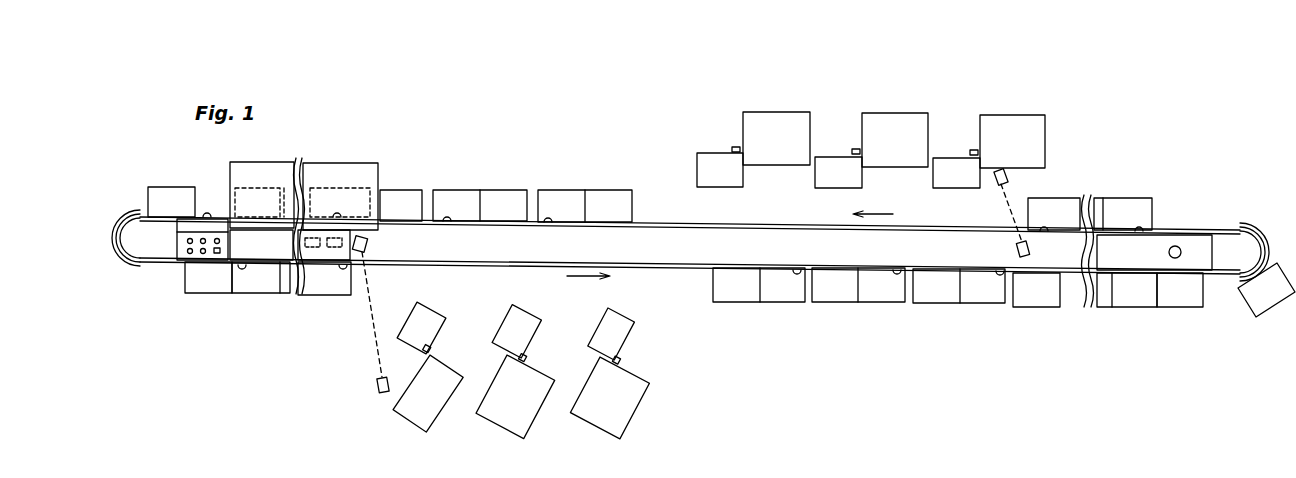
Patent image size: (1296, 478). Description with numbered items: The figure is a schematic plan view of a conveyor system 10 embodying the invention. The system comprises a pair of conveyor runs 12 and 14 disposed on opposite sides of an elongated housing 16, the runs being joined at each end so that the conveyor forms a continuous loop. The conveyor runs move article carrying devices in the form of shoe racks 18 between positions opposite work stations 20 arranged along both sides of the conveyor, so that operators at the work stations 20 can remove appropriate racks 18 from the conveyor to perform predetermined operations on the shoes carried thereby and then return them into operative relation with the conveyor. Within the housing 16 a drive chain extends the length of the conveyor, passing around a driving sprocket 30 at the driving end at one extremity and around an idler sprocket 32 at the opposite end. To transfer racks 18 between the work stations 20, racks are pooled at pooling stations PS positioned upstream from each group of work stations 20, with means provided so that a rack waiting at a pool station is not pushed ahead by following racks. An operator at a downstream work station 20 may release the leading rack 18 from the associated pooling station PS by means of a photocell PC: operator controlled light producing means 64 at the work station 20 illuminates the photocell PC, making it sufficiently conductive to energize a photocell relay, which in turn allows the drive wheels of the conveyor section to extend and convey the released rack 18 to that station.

The conveyor system 10 is at (1134, 328).
The conveyor run 12 is at (676, 266).
The conveyor run 14 is at (664, 222).
The elongated housing 16 is at (740, 232).
The shoe rack 18 is at (241, 295).
The work station 20 is at (785, 111).
The driving sprocket 30 is at (132, 278).
The idler sprocket 32 is at (1276, 238).
The operator controlled light producing means 64 is at (376, 385).
The photocell PC is at (368, 244).
The pooling station PS is at (334, 312).